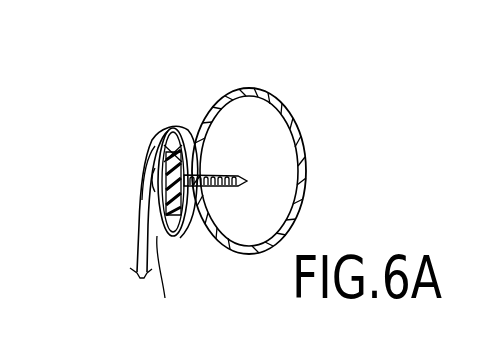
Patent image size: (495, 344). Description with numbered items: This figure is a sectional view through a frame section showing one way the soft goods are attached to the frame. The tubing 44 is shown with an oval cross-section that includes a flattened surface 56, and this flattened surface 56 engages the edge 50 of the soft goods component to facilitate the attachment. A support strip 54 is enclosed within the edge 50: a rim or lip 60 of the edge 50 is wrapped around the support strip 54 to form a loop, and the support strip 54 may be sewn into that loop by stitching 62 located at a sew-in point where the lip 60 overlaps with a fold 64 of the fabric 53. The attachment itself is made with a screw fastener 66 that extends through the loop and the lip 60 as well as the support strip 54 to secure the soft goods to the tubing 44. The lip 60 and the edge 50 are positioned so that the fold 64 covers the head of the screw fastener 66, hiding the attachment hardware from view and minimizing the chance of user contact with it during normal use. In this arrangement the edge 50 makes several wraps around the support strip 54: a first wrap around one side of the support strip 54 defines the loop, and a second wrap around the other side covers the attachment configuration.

The tubing 44 is at (295, 116).
The edge 50 is at (152, 140).
The fabric 53 is at (138, 232).
The support strip 54 is at (183, 228).
The flattened surface 56 is at (158, 130).
The lip 60 is at (162, 282).
The stitching 62 is at (174, 126).
The fold 64 is at (142, 160).
The screw fastener 66 is at (227, 187).